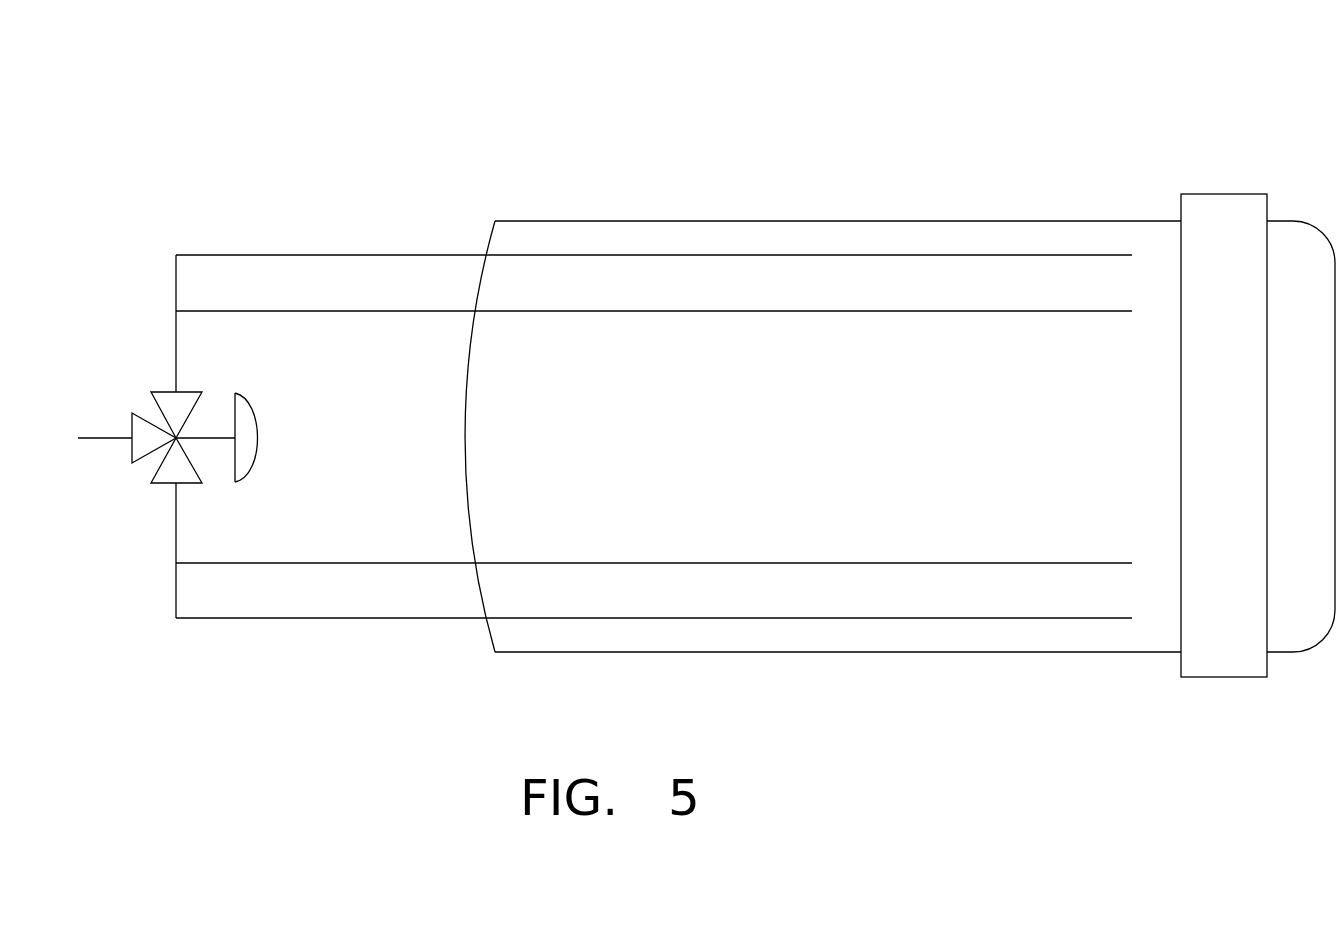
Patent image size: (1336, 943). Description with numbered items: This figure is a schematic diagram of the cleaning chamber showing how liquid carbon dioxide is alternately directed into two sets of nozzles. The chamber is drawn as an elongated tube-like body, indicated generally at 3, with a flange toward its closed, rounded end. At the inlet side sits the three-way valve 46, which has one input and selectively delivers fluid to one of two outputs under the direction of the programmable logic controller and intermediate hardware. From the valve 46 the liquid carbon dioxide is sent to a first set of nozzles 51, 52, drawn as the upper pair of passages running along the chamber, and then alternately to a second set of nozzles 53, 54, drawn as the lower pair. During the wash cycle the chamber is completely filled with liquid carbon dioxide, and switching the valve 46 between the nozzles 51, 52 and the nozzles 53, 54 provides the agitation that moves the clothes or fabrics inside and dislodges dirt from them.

The probe tube assembly 3 is at (1081, 429).
The three-way valve 46 is at (202, 393).
The nozzle 51 is at (935, 253).
The nozzle 52 is at (737, 310).
The nozzle 53 is at (835, 563).
The nozzle 54 is at (892, 618).